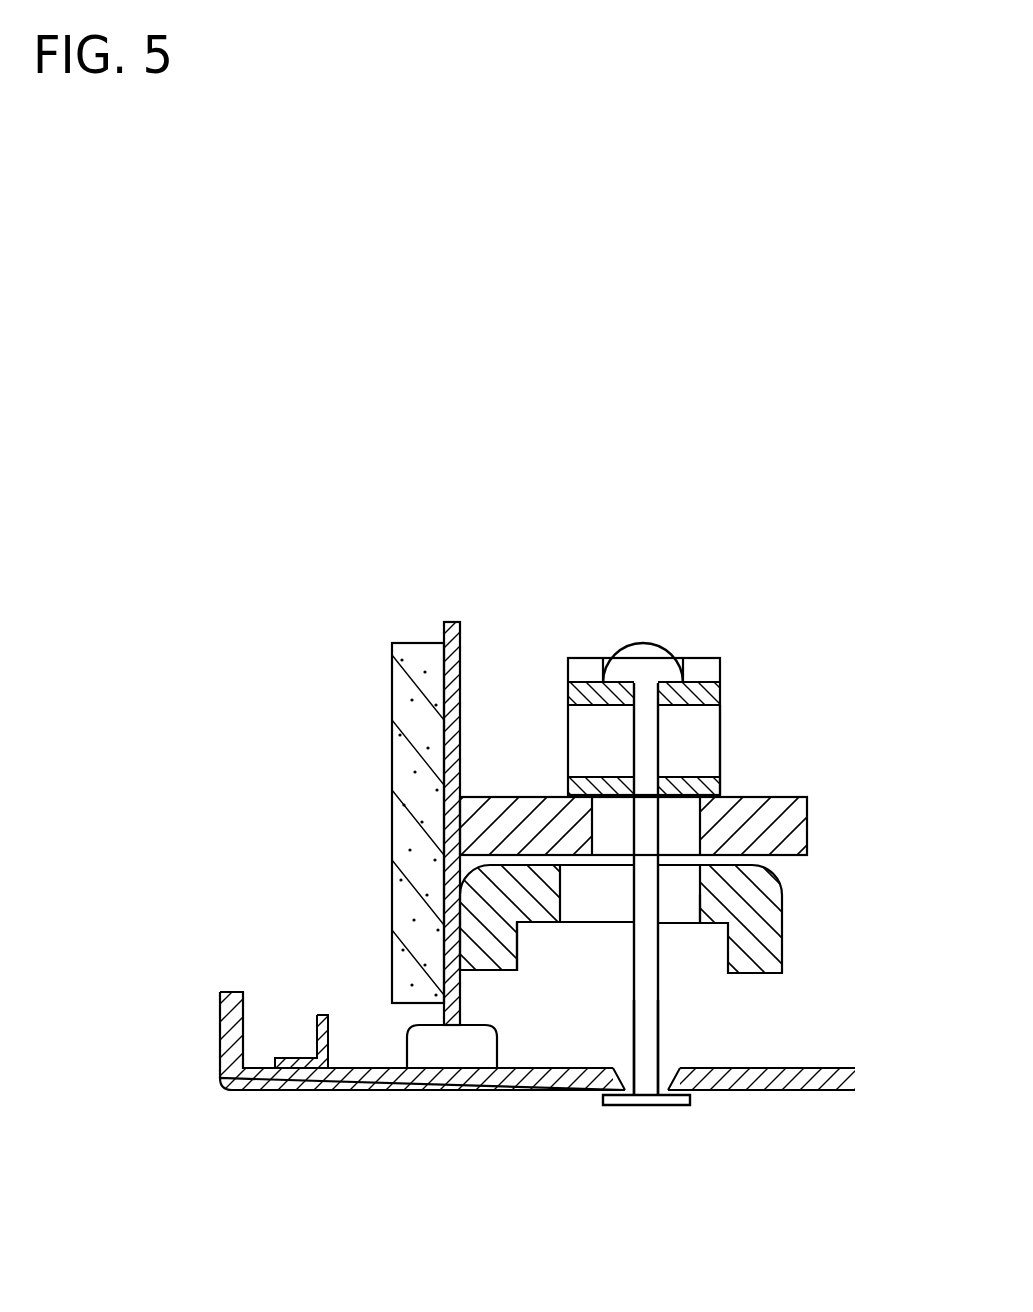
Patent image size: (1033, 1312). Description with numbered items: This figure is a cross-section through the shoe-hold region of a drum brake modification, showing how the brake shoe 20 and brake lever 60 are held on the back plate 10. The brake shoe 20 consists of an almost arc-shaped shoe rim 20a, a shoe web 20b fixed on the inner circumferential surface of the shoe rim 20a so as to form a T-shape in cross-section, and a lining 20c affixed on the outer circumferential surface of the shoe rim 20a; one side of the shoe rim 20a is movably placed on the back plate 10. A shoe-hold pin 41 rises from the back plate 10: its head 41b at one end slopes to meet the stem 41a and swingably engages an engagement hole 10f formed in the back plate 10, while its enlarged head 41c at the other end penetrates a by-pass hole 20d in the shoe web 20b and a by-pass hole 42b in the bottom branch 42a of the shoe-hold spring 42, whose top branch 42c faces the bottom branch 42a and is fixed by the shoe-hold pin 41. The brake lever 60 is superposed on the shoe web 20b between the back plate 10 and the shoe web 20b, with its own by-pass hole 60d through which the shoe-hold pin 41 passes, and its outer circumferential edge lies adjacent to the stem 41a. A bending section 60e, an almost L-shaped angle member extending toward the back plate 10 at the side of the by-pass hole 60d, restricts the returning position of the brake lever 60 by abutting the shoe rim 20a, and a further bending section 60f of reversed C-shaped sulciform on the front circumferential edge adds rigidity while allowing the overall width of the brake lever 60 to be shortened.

The back plate 10 is at (537, 1111).
The engagement hole 10f is at (615, 1105).
The brake shoe 20 is at (594, 760).
The shoe rim 20a is at (460, 690).
The shoe web 20b is at (689, 810).
The lining 20c is at (392, 742).
The by-pass hole 20d is at (694, 829).
The shoe-hold pin 41 is at (721, 895).
The stem 41a is at (659, 1045).
The head 41b is at (665, 1106).
The enlarged head 41c is at (645, 655).
The shoe-hold spring 42 is at (696, 664).
The bottom branch 42a is at (722, 790).
The by-pass hole 42b is at (677, 776).
The top branch 42c is at (590, 674).
The brake lever 60 is at (680, 968).
The by-pass hole 60d is at (702, 904).
The bending section 60e is at (486, 972).
The bending section 60f is at (757, 975).